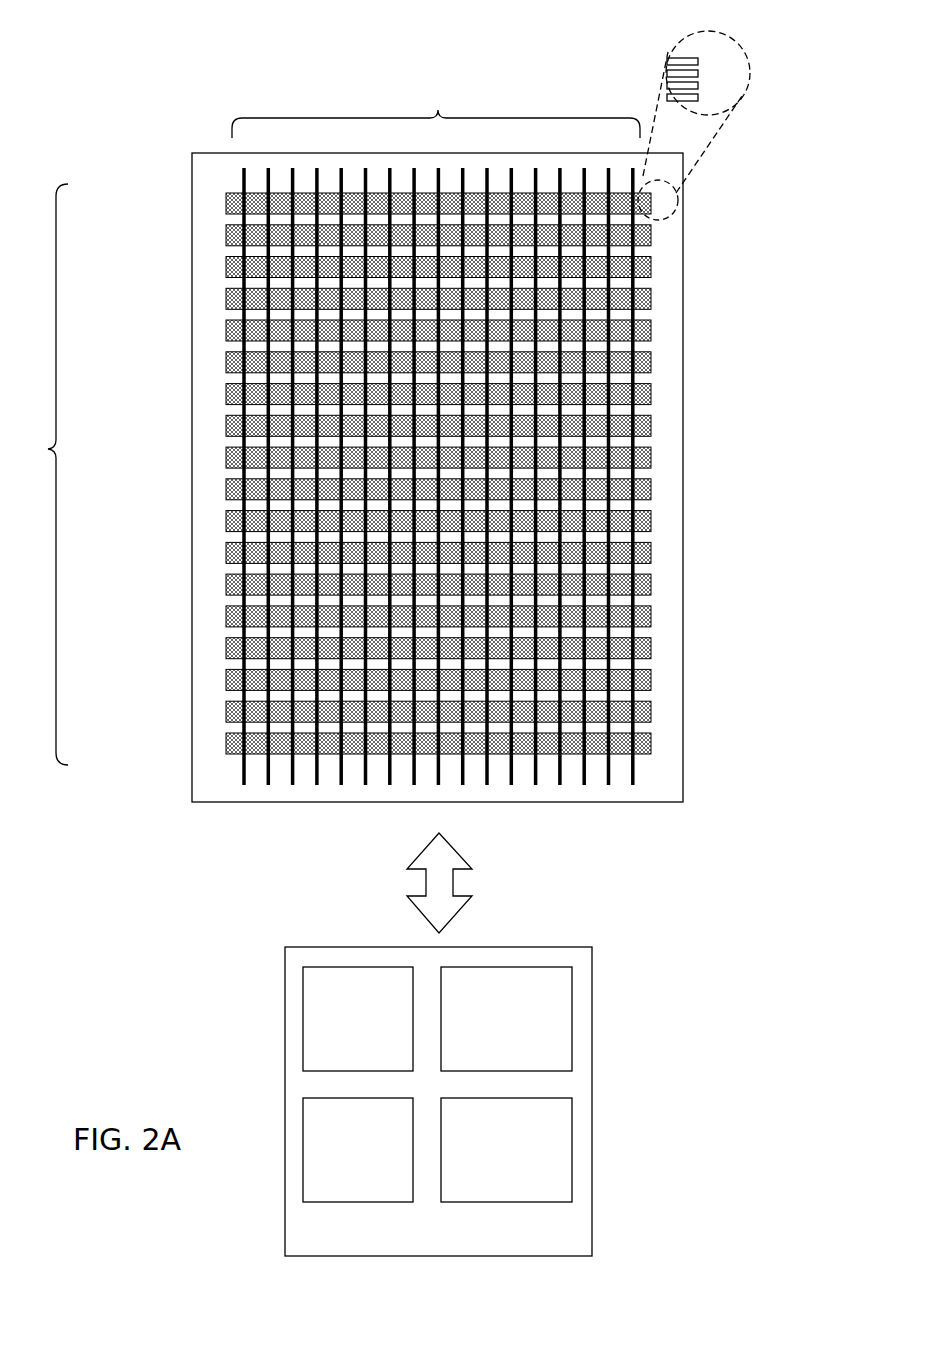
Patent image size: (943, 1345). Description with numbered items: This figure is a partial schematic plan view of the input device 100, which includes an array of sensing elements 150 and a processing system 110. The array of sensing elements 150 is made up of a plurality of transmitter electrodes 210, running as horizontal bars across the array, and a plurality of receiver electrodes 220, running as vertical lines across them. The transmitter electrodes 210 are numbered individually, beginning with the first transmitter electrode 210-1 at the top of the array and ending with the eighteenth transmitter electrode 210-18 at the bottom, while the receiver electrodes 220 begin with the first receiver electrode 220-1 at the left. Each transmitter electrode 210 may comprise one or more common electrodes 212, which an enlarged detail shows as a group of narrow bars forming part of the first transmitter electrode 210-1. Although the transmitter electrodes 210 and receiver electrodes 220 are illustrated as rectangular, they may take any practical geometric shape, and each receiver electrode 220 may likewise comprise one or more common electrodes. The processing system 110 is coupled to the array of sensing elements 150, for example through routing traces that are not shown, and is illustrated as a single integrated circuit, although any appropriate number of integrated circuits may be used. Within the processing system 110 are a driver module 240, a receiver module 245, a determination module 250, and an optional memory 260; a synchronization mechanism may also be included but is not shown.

The input device 100 is at (160, 86).
The processing system 110 is at (438, 1101).
The array of sensing elements 150 is at (301, 182).
The transmitter electrodes 210 is at (48, 449).
The first transmitter electrode 210-1 is at (226, 203).
The eighteenth transmitter electrode 210-18 is at (226, 744).
The common electrodes 212 is at (700, 60).
The receiver electrodes 220 is at (436, 430).
The first receiver electrode 220-1 is at (246, 178).
The driver module 240 is at (358, 1019).
The receiver module 245 is at (358, 1150).
The determination module 250 is at (506, 1150).
The optional memory 260 is at (506, 1019).